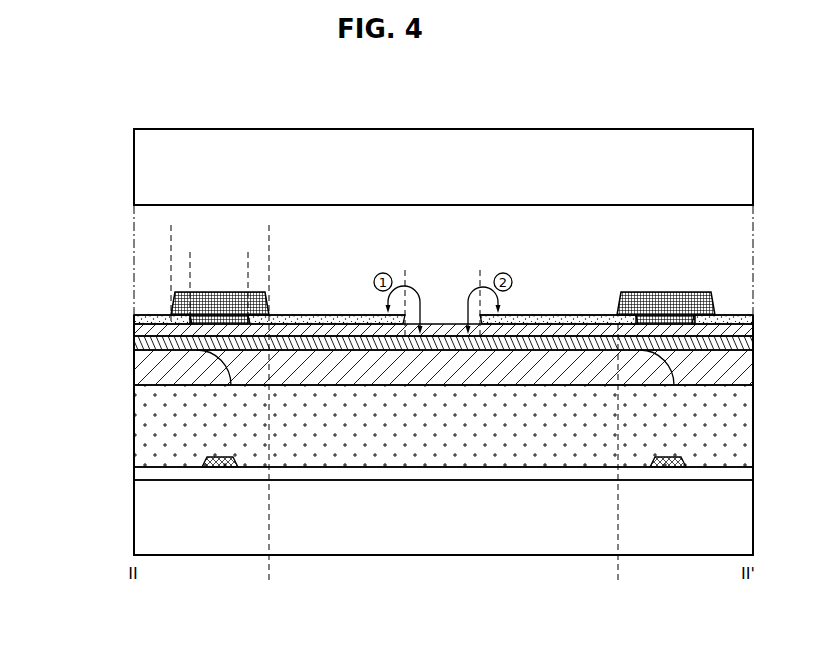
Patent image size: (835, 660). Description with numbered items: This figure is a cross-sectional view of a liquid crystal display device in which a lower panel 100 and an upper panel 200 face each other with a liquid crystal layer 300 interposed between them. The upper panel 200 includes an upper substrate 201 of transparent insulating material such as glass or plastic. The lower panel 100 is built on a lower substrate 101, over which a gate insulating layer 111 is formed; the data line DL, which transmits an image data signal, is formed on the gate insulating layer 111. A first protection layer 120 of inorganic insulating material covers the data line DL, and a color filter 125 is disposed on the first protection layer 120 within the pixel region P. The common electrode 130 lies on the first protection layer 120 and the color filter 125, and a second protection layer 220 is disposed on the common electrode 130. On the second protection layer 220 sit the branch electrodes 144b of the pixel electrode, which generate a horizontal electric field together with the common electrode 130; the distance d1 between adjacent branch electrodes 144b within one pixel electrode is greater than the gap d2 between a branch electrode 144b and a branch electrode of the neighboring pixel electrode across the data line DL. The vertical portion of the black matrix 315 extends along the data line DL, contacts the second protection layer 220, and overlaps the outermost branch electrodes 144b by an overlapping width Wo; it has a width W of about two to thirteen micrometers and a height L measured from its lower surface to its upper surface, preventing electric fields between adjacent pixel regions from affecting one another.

The upper panel 200 is at (762, 129).
The upper substrate 201 is at (152, 168).
The liquid crystal layer 300 is at (735, 236).
The lower panel 100 is at (762, 290).
The lower substrate 101 is at (152, 518).
The gate insulating layer 111 is at (152, 470).
The data line DL is at (213, 468).
The first protection layer 120 is at (152, 423).
The color filter 125 is at (153, 365).
The common electrode 130 is at (150, 341).
The second protection layer 220 is at (150, 331).
The branch electrode 144b is at (333, 314).
The black matrix 315 is at (205, 296).
The width of the vertical portion W is at (171, 228).
The overlapping width Wo is at (175, 257).
The gap between branch electrodes of adjacent pixel electrodes d2 is at (297, 260).
The height of the vertical portion L is at (220, 292).
The distance between adjacent branch electrodes d1 is at (480, 279).
The pixel region P is at (269, 575).